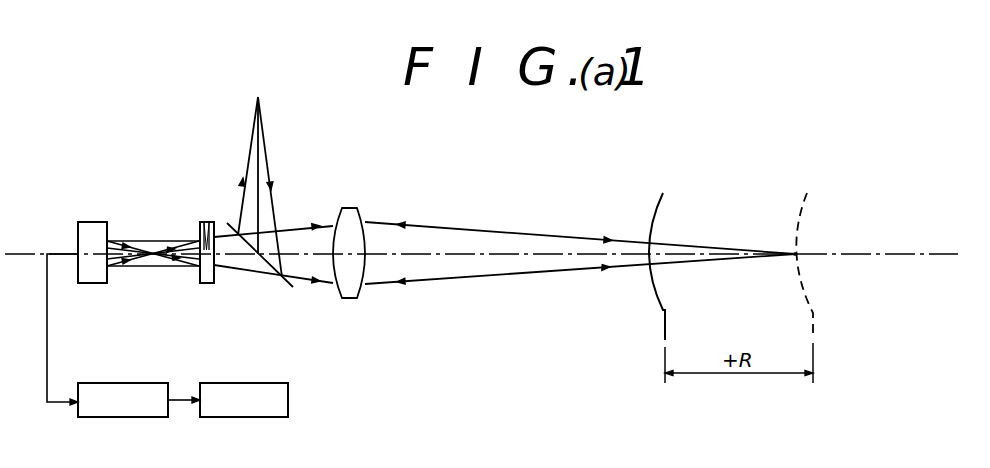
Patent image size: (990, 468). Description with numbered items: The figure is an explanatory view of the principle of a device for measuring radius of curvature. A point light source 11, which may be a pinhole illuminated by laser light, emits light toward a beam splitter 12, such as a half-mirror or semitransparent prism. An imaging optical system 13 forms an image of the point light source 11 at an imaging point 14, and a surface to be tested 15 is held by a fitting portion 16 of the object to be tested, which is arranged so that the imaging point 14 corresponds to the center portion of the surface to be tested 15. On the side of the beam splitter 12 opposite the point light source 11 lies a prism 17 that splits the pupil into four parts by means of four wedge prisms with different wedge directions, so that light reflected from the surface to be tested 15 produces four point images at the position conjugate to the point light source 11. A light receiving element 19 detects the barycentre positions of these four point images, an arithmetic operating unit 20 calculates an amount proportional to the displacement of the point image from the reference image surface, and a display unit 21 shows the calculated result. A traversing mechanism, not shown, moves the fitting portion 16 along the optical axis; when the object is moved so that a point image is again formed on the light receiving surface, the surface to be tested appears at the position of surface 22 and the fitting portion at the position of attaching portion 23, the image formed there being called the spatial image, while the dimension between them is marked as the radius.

The point light source 11 is at (258, 97).
The beam splitter 12 is at (267, 265).
The imaging optical system 13 is at (358, 292).
The imaging point 14 is at (797, 252).
The surface to be tested 15 is at (810, 202).
The fitting portion of object to be tested 16 is at (815, 322).
The prism for splitting the pupil by four 17 is at (200, 283).
The light receiving element 19 is at (87, 283).
The arithmetic operating unit 20 is at (118, 418).
The display unit 21 is at (240, 417).
The surface to be tested at spatial image position 22 is at (655, 216).
The attaching portion at spatial image position 23 is at (667, 323).